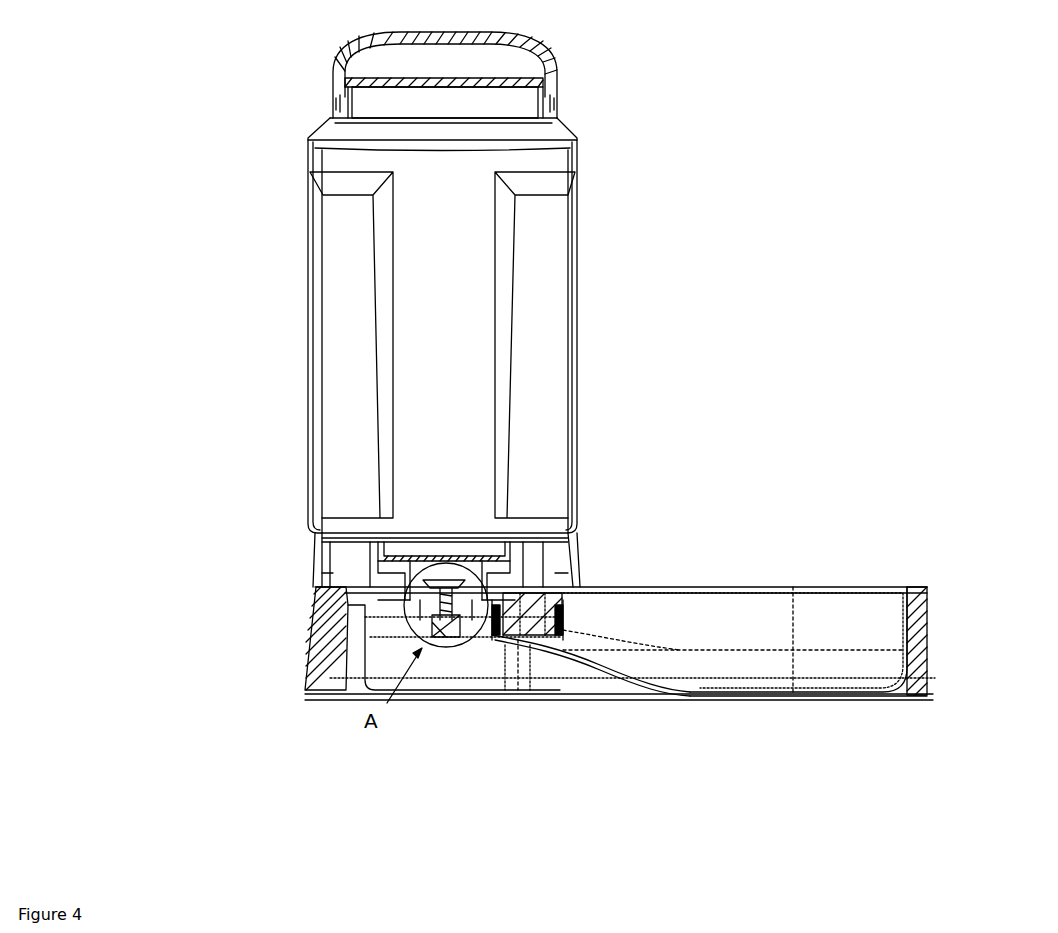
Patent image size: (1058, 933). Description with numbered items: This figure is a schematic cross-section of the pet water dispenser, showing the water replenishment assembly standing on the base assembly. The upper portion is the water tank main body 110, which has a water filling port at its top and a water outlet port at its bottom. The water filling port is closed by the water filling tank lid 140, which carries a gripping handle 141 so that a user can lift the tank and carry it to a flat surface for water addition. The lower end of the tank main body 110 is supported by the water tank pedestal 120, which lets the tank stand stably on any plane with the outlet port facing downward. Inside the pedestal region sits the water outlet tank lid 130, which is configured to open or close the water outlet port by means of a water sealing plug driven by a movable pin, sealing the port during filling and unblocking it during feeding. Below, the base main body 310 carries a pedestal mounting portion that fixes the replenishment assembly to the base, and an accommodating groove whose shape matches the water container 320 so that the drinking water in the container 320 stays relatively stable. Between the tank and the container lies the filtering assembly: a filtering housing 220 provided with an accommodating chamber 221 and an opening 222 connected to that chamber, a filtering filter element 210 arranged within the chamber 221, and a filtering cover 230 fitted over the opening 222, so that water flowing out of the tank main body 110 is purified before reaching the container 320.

The water tank main body 110 is at (572, 307).
The water tank pedestal 120 is at (578, 586).
The water outlet tank lid 130 is at (405, 600).
The water filling tank lid 140 is at (557, 95).
The gripping handle 141 is at (555, 66).
The filtering filter element 210 is at (537, 635).
The filtering housing 220 is at (485, 630).
The accommodating chamber 221 is at (562, 650).
The opening 222 is at (488, 625).
The filtering cover 230 is at (518, 690).
The base main body 310 is at (902, 587).
The water container 320 is at (565, 640).